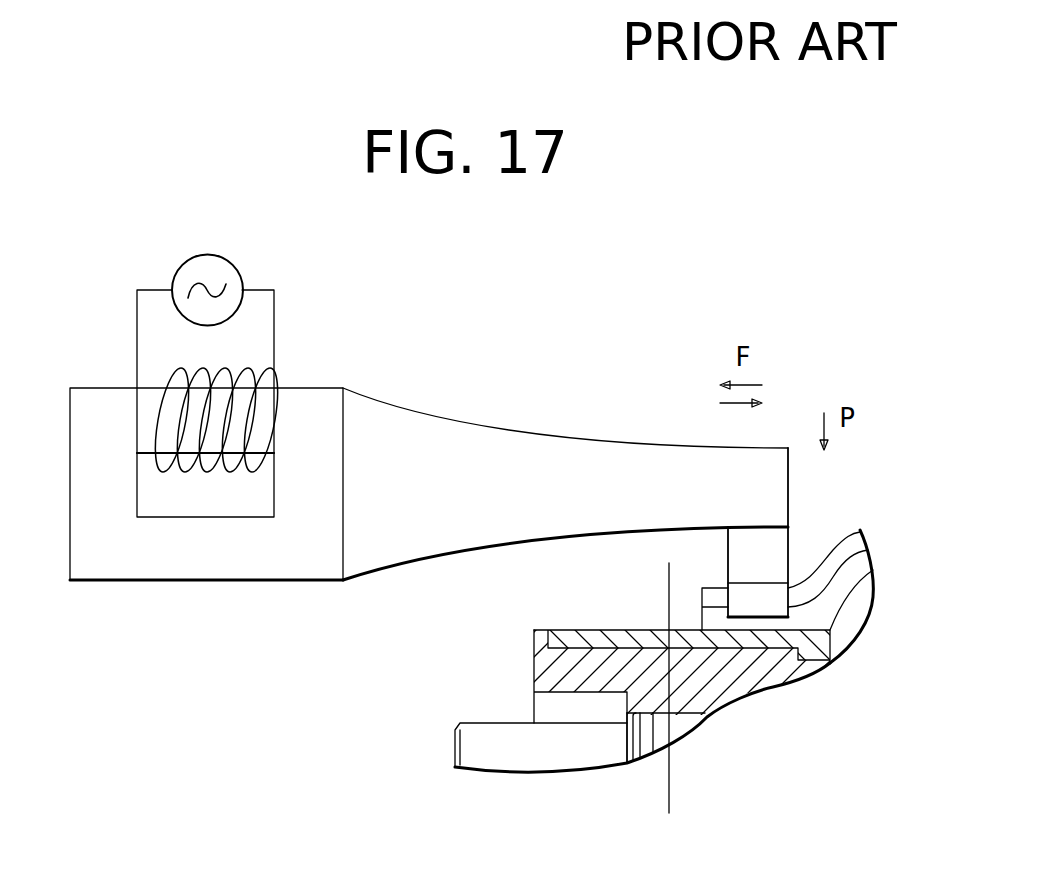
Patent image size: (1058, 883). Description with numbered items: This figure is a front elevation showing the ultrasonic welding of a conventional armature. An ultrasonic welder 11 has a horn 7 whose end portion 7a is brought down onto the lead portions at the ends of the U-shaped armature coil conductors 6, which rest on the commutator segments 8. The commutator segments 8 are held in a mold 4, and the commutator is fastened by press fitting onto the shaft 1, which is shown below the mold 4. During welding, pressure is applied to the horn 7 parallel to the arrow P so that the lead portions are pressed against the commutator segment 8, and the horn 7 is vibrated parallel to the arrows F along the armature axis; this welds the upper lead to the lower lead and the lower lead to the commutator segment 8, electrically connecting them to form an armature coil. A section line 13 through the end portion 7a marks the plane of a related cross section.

The ultrasonic welder 11 is at (319, 388).
The horn 7 is at (515, 433).
The end portion of the horn 7a is at (733, 571).
The armature coil conductors 6 is at (862, 536).
The section line 13 is at (666, 573).
The commutator segments 8 is at (565, 635).
The mold 4 is at (547, 668).
The shaft 1 is at (486, 760).